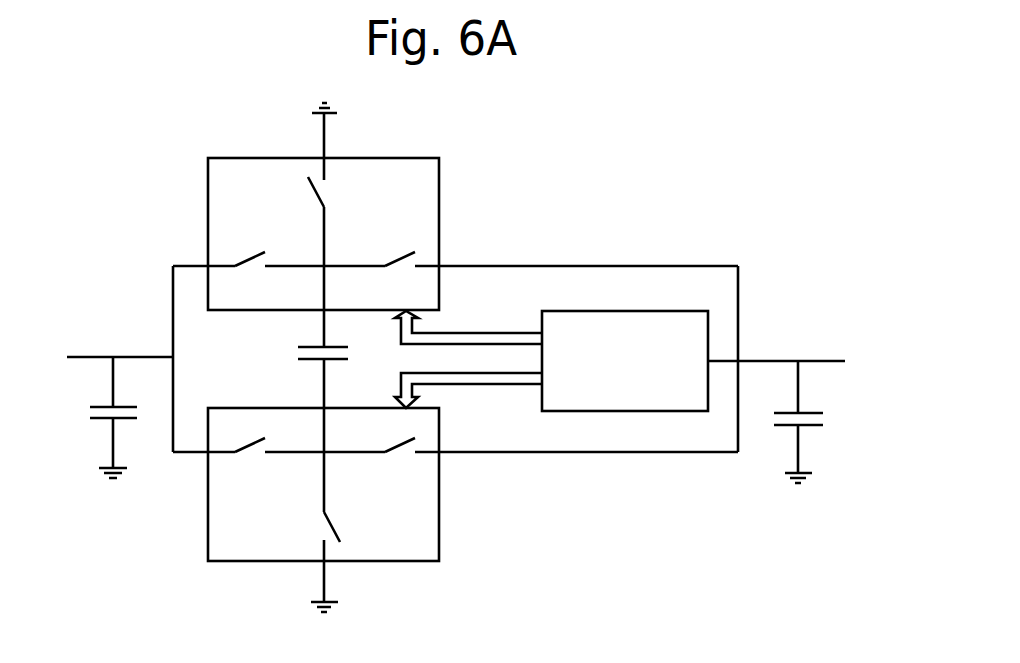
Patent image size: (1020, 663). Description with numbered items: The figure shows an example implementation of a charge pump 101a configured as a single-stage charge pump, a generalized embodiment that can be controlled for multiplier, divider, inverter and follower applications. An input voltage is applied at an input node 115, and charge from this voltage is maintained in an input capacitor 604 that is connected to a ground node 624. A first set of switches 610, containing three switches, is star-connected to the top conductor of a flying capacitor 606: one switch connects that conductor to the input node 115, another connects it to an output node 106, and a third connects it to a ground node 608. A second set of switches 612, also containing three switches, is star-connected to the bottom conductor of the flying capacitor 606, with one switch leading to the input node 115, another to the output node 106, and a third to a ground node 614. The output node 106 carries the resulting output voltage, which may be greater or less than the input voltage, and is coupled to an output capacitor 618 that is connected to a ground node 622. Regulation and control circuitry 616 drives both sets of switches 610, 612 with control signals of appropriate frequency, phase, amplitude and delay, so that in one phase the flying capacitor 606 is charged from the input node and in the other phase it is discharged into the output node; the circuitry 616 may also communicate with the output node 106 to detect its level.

The charge pump 101a is at (613, 173).
The first set of switches 610 is at (440, 173).
The second set of switches 612 is at (440, 518).
The ground node 608 is at (340, 112).
The ground node 614 is at (340, 597).
The flying capacitor Cf 606 is at (308, 362).
The input node 115 is at (67, 357).
The input capacitor Cin 604 is at (103, 422).
The ground node 624 is at (106, 486).
The regulation and control circuitry 616 is at (551, 361).
The output node 106 is at (846, 360).
The output capacitor Cout 618 is at (787, 431).
The ground node 622 is at (816, 478).